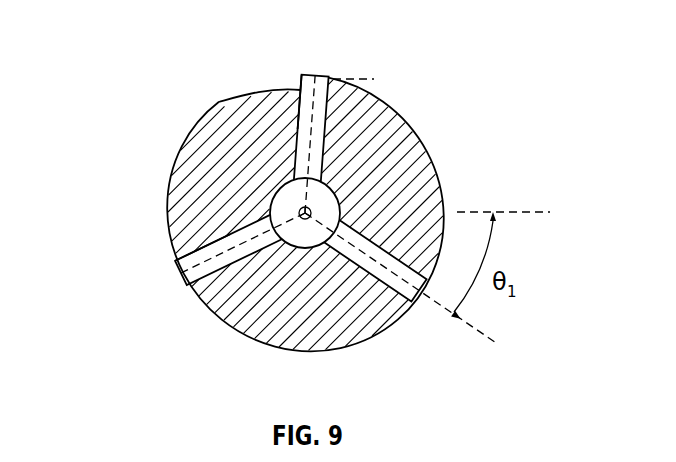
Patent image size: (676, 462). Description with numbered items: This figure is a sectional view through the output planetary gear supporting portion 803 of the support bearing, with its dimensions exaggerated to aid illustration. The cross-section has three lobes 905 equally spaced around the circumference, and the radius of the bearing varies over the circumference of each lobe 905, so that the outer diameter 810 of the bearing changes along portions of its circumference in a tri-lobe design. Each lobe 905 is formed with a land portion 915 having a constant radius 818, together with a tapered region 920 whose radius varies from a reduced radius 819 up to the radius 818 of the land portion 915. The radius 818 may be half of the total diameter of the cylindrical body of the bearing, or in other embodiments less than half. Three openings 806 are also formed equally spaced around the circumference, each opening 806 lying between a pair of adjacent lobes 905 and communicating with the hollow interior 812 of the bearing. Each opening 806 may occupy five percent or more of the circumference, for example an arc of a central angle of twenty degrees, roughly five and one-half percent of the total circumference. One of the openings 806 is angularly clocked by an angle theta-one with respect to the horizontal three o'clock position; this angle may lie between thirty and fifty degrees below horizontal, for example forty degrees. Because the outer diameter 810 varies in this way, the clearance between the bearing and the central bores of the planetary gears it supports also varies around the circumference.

The output planetary gear supporting portion 803 is at (104, 52).
The opening 806 is at (324, 77).
The outer diameter 810 is at (348, 348).
The hollow interior 812 is at (296, 208).
The radius 818 is at (300, 89).
The reduced radius 819 is at (167, 228).
The lobe 905 is at (163, 162).
The land portion 915 is at (374, 80).
The tapered region 920 is at (217, 108).